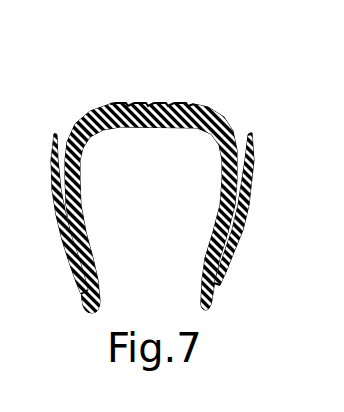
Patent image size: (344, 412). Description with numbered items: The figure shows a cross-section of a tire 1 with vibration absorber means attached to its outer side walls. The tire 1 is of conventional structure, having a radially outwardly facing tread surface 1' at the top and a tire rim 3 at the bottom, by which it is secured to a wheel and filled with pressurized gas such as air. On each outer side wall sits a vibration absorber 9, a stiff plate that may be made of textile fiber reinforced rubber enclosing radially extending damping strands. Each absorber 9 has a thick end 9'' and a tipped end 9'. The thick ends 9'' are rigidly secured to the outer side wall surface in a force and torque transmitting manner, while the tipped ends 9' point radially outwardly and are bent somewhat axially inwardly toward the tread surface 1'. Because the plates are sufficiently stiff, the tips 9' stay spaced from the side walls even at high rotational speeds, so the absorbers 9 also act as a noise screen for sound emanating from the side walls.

The tire 1 is at (198, 78).
The tread surface 1' is at (152, 71).
The tire rim 3 is at (213, 303).
The vibration absorbers 9 is at (172, 206).
The tipped ends 9' is at (157, 129).
The thick ends 9'' is at (148, 286).